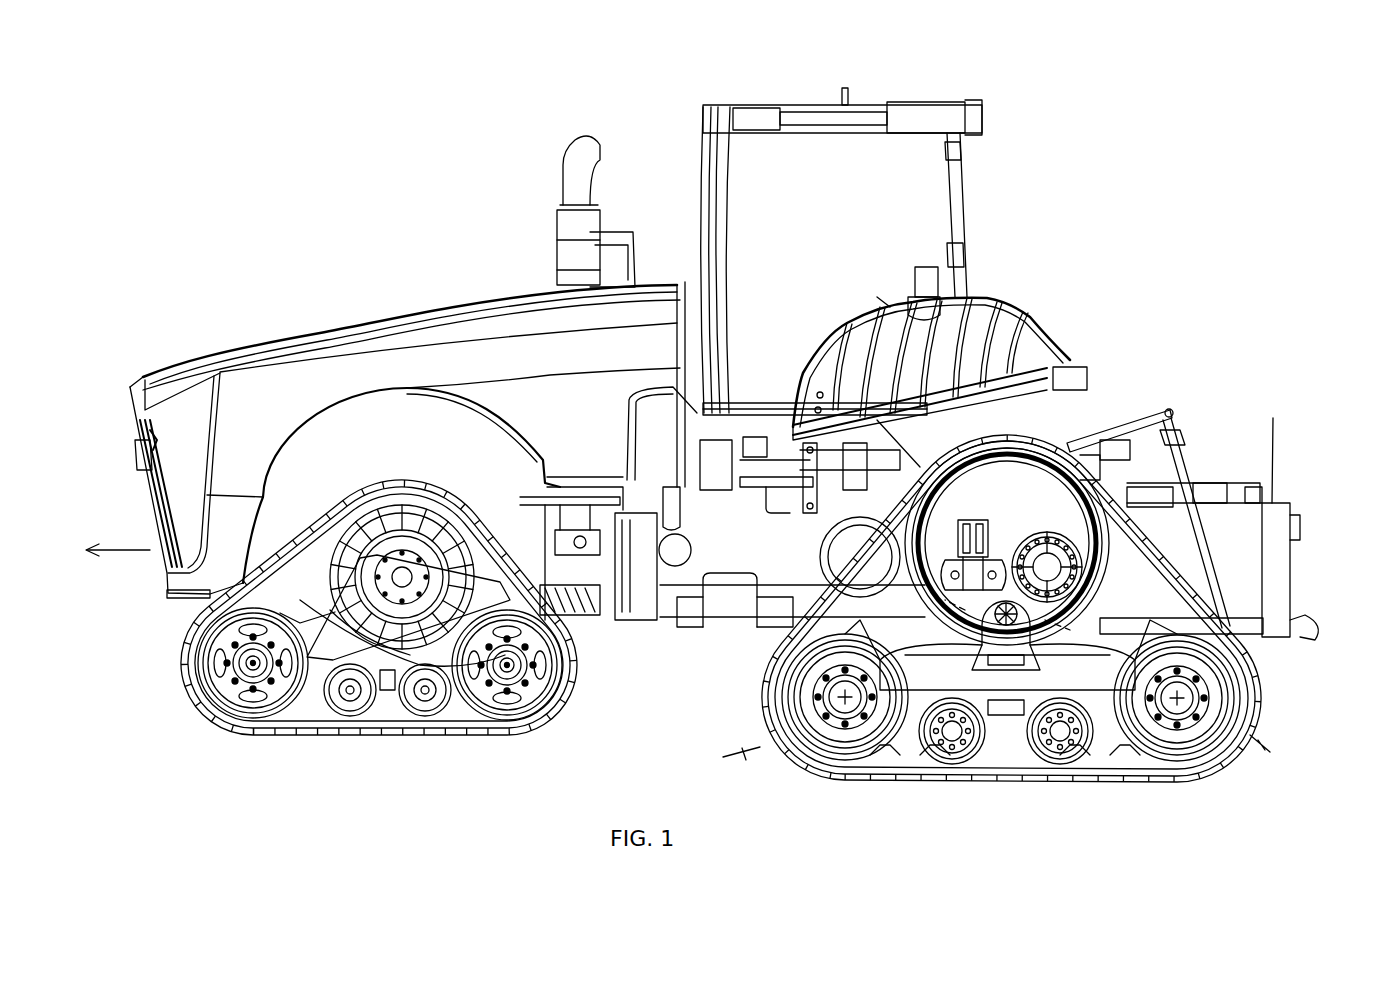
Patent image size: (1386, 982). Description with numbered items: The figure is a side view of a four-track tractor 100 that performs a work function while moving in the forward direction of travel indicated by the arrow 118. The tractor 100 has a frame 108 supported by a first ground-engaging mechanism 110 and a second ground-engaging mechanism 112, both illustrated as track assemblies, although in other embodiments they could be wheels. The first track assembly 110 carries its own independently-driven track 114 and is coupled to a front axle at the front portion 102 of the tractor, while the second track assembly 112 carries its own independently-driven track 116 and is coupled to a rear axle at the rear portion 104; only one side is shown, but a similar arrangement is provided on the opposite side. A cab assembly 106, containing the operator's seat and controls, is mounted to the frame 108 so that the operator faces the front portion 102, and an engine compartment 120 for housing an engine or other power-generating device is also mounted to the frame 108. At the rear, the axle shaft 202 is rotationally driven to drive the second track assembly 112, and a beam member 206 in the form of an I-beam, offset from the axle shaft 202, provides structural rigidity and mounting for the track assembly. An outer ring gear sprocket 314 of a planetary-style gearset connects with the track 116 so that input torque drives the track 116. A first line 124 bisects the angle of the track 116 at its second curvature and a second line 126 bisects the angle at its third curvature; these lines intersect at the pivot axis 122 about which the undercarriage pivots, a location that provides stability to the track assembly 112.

The tractor 100 is at (340, 134).
The front portion 102 is at (220, 274).
The rear portion 104 is at (1210, 336).
The cab assembly 106 is at (995, 160).
The frame 108 is at (638, 585).
The first ground-engaging mechanism (first track assembly) 110 is at (200, 735).
The second ground-engaging mechanism (second track assembly) 112 is at (1292, 713).
The track 114 is at (393, 735).
The track (belt) 116 is at (922, 778).
The arrow indicating forward direction of travel 118 is at (126, 553).
The engine compartment 120 is at (393, 333).
The pivot axis 122 is at (1007, 640).
The first line 124 is at (748, 762).
The second line 126 is at (1262, 745).
The axle shaft 202 is at (1045, 560).
The beam member 206 is at (968, 520).
The ring gear sprocket 314 is at (1055, 462).